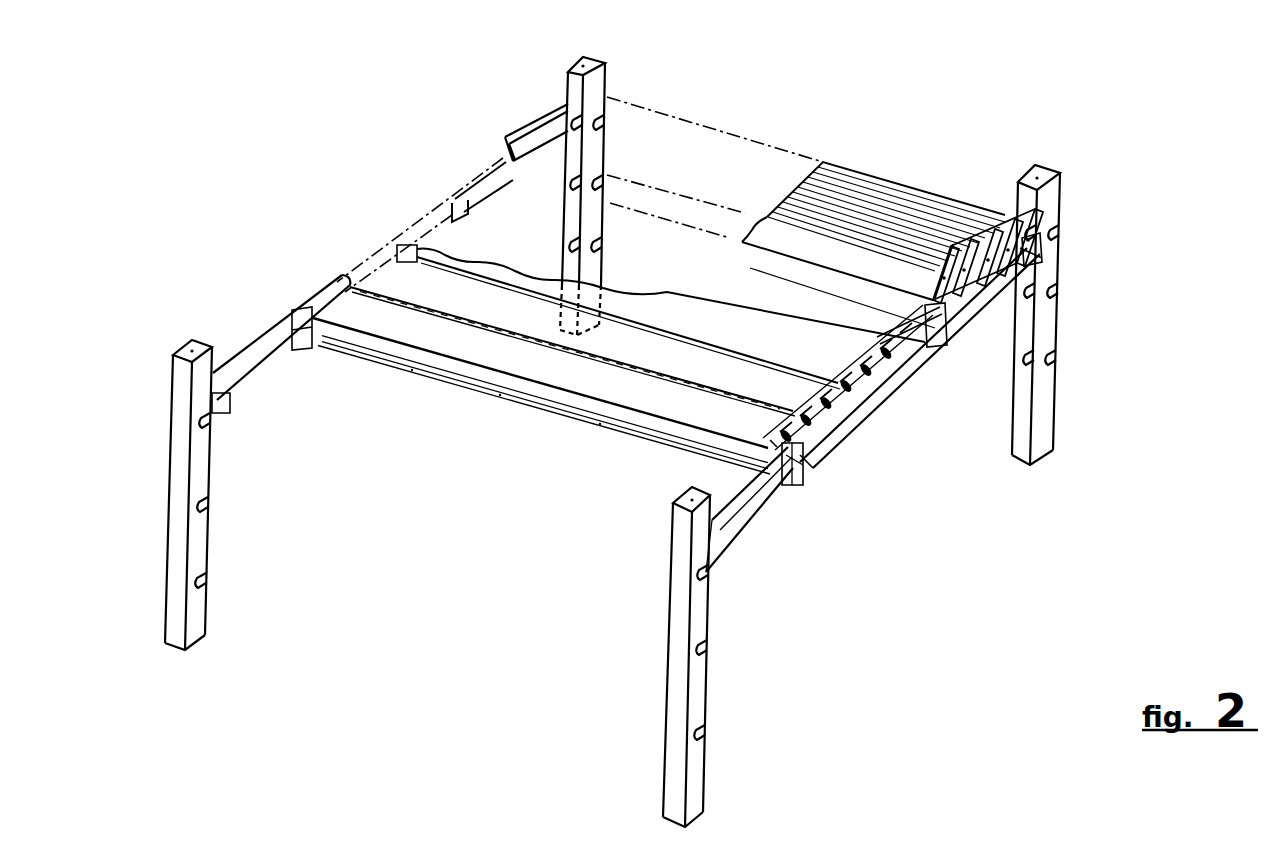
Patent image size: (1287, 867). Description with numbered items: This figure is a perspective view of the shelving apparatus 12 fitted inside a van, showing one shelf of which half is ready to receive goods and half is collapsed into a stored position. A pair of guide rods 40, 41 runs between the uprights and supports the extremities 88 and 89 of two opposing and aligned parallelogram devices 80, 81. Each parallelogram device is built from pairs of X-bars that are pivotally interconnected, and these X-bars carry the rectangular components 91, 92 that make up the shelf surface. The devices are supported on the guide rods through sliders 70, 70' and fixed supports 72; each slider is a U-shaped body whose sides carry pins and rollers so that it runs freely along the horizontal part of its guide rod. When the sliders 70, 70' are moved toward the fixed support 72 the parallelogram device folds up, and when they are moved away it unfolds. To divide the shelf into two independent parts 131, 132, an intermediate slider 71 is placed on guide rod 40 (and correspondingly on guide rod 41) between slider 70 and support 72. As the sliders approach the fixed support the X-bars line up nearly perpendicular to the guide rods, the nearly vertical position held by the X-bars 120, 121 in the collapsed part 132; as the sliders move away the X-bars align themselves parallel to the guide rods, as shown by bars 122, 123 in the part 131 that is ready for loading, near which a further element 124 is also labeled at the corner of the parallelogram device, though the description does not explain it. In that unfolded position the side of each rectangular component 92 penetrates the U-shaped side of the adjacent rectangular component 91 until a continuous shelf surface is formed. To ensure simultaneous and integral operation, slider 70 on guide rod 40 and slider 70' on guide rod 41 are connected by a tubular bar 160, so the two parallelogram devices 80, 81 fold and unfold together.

The shelving apparatus 12 is at (497, 405).
The guide rod 40 is at (740, 530).
The guide rod 41 is at (540, 126).
The slider 70 is at (808, 514).
The slider 70' is at (281, 314).
The intermediate slider 71 is at (943, 340).
The fixed support 72 is at (1040, 258).
The parallelogram device 80 is at (986, 305).
The parallelogram device 81 is at (369, 256).
The extremity 88 is at (808, 474).
The extremity 89 is at (1038, 240).
The rectangular component 91 is at (568, 373).
The rectangular component 92 is at (670, 357).
The X-bar 120 is at (928, 270).
The X-bar 121 is at (942, 250).
The bar 122 is at (805, 428).
The bar 123 is at (778, 440).
The chain link 124 is at (803, 467).
The shelf part 131 is at (475, 349).
The shelf part 132 is at (811, 207).
The tubular bar 160 is at (413, 368).